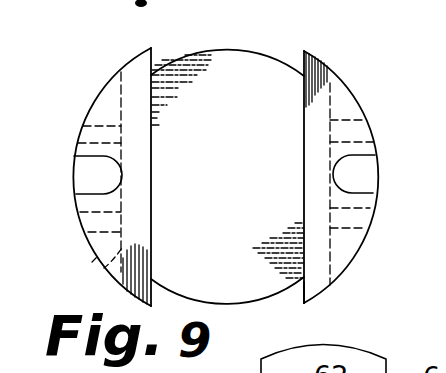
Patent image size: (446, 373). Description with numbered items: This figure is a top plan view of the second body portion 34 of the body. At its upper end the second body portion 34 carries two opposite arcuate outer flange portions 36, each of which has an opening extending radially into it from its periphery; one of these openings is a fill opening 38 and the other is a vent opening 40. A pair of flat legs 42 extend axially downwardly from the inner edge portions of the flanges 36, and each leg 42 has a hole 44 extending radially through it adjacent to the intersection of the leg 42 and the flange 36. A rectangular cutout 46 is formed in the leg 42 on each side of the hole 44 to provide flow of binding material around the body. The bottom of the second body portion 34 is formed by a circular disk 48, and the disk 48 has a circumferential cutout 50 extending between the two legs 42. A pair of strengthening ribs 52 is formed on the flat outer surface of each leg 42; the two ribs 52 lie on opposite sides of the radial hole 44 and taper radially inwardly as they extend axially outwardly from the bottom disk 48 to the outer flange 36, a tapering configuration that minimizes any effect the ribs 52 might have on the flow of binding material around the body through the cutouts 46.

The second body portion 34 is at (249, 52).
The arcuate outer flange portion 36 is at (116, 74).
The fill opening 38 is at (76, 171).
The vent opening 40 is at (358, 172).
The flat leg 42 is at (152, 62).
The hole 44 is at (122, 194).
The rectangular cutout 46 is at (103, 271).
The circular disk 48 is at (273, 70).
The circumferential cutout 50 is at (305, 298).
The strengthening rib 52 is at (86, 258).